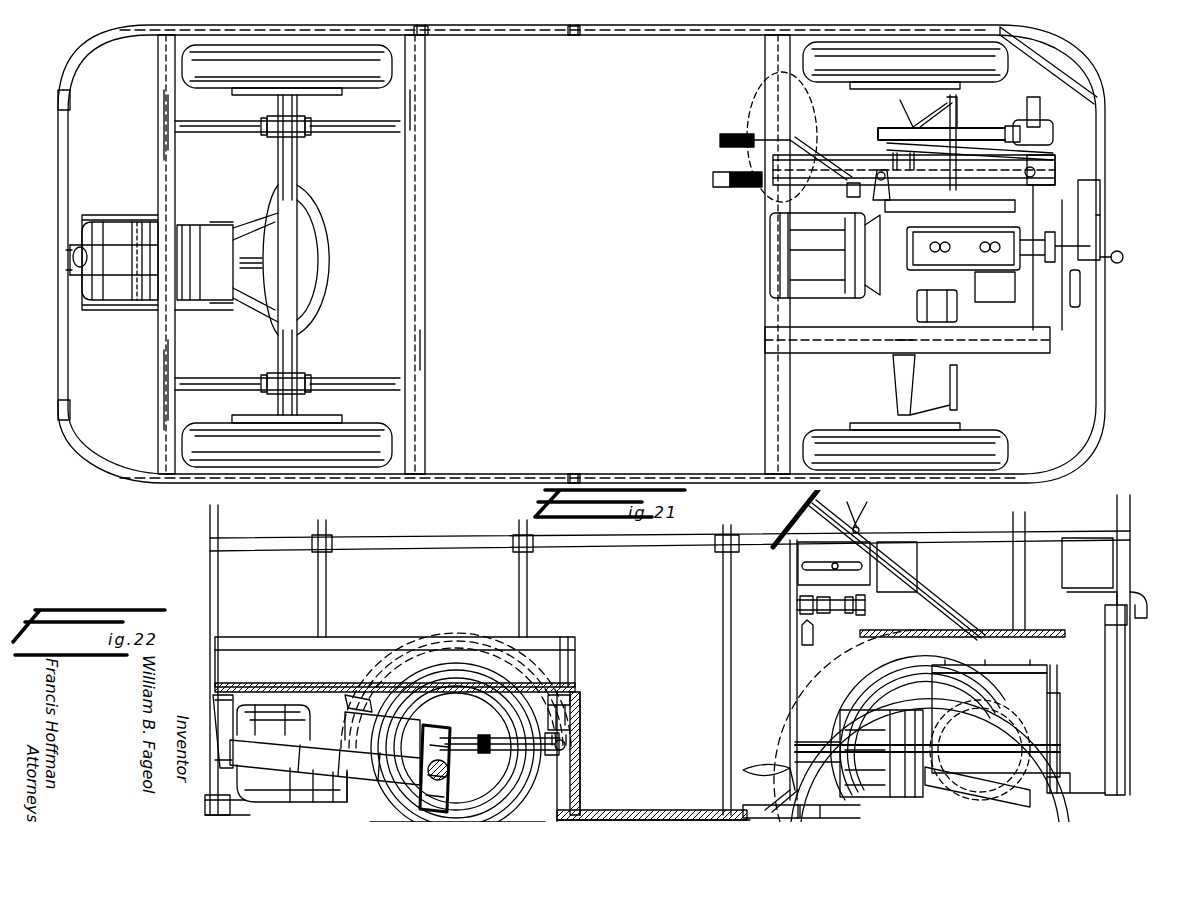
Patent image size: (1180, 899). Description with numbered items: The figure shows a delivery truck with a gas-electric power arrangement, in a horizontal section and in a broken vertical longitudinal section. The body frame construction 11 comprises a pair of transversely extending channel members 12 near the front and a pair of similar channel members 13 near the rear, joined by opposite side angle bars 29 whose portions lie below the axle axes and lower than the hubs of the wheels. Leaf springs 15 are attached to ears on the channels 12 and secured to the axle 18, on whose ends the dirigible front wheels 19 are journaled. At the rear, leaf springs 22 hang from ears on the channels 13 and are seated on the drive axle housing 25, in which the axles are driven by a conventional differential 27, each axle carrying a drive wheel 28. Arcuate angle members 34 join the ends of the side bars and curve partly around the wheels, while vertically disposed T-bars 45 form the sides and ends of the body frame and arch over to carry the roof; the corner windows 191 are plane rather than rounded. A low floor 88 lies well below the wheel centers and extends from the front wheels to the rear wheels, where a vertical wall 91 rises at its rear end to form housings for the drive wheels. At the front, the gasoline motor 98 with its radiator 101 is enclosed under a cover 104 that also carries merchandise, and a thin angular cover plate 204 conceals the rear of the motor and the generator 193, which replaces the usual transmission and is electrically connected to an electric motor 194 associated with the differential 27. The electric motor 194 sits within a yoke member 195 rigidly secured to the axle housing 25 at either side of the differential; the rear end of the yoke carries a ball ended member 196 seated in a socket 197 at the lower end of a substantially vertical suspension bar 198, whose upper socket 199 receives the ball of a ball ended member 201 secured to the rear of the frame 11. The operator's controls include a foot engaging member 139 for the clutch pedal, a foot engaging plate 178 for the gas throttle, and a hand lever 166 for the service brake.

In FIG. 22, the body frame construction 11 is at (842, 812).
In FIG. 21, the channel members 12 is at (795, 382).
In FIG. 22, the channel members 12 is at (1057, 790).
In FIG. 21, the channel members 13 is at (165, 200).
In FIG. 22, the channel members 13 is at (355, 702).
In FIG. 21, the leaf springs 15 is at (990, 172).
In FIG. 22, the leaf springs 15 is at (574, 703).
In FIG. 21, the axle 18 is at (906, 372).
In FIG. 21, the front wheels 19 is at (985, 72).
In FIG. 22, the front wheels 19 is at (921, 726).
In FIG. 21, the leaf springs 22 is at (350, 130).
In FIG. 22, the leaf springs 22 is at (515, 743).
In FIG. 21, the drive axle housing 25 is at (290, 360).
In FIG. 21, the differential 27 is at (322, 237).
In FIG. 22, the differential 27 is at (468, 768).
In FIG. 21, the drive wheel 28 is at (366, 72).
In FIG. 22, the drive wheel 28 is at (362, 798).
In FIG. 21, the side angle bars 29 is at (655, 36).
In FIG. 22, the arcuate angle members 34 is at (990, 636).
In FIG. 21, the T-bars 45 is at (430, 37).
In FIG. 22, the T-bars 45 is at (1012, 563).
In FIG. 22, the floor 88 is at (642, 800).
In FIG. 22, the vertical wall 91 is at (578, 782).
In FIG. 21, the gasoline motor 98 is at (945, 265).
In FIG. 22, the gasoline motor 98 is at (992, 733).
In FIG. 21, the radiator 101 is at (1086, 292).
In FIG. 22, the radiator 101 is at (1096, 640).
In FIG. 22, the cover 104 is at (887, 622).
In FIG. 21, the foot engaging member 139 is at (728, 140).
In FIG. 22, the foot engaging member 139 is at (770, 768).
In FIG. 22, the hand lever 166 is at (905, 606).
In FIG. 21, the foot engaging plate 178 is at (740, 188).
In FIG. 22, the foot engaging plate 178 is at (770, 806).
In FIG. 21, the windows 191 is at (1050, 57).
In FIG. 21, the generator 193 is at (825, 255).
In FIG. 22, the generator 193 is at (842, 727).
In FIG. 21, the electric motor 194 is at (130, 308).
In FIG. 22, the electric motor 194 is at (312, 700).
In FIG. 21, the yoke member 195 is at (228, 318).
In FIG. 22, the yoke member 195 is at (325, 748).
In FIG. 22, the ball ended member 196 is at (292, 772).
In FIG. 22, the socket 197 is at (212, 800).
In FIG. 22, the suspension bar 198 is at (273, 722).
In FIG. 22, the socket 199 is at (250, 690).
In FIG. 22, the ball ended member 201 is at (212, 690).
In FIG. 22, the cover plate 204 is at (806, 652).